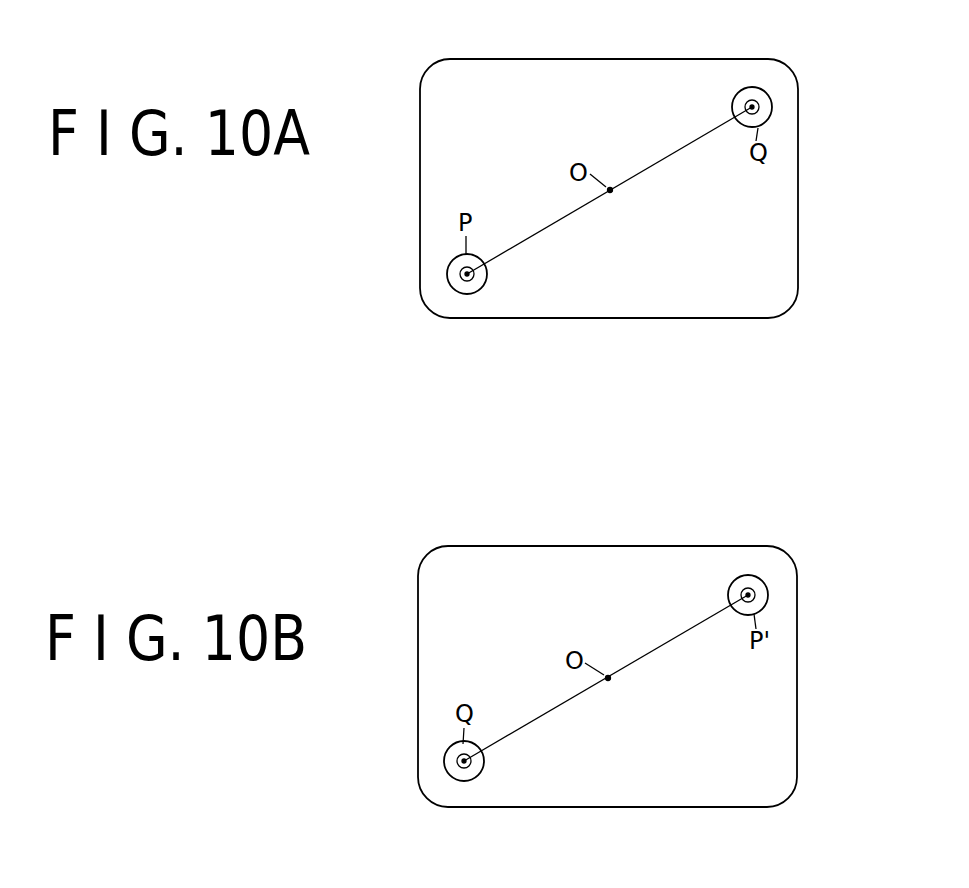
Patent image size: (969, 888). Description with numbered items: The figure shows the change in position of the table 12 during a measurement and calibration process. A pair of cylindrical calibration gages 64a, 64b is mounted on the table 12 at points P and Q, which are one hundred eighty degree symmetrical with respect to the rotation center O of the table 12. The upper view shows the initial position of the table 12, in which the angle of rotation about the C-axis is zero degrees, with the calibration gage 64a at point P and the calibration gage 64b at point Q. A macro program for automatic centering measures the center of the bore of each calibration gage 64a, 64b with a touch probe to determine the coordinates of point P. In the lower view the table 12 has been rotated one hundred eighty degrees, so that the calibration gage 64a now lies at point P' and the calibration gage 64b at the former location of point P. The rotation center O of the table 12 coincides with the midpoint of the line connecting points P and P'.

In FIG. 10A, the table 12 is at (607, 80).
In FIG. 10B, the table 12 is at (605, 567).
In FIG. 10A, the calibration gage 64a is at (448, 273).
In FIG. 10B, the calibration gage 64a is at (762, 591).
In FIG. 10A, the calibration gage 64b is at (766, 103).
In FIG. 10B, the calibration gage 64b is at (445, 760).